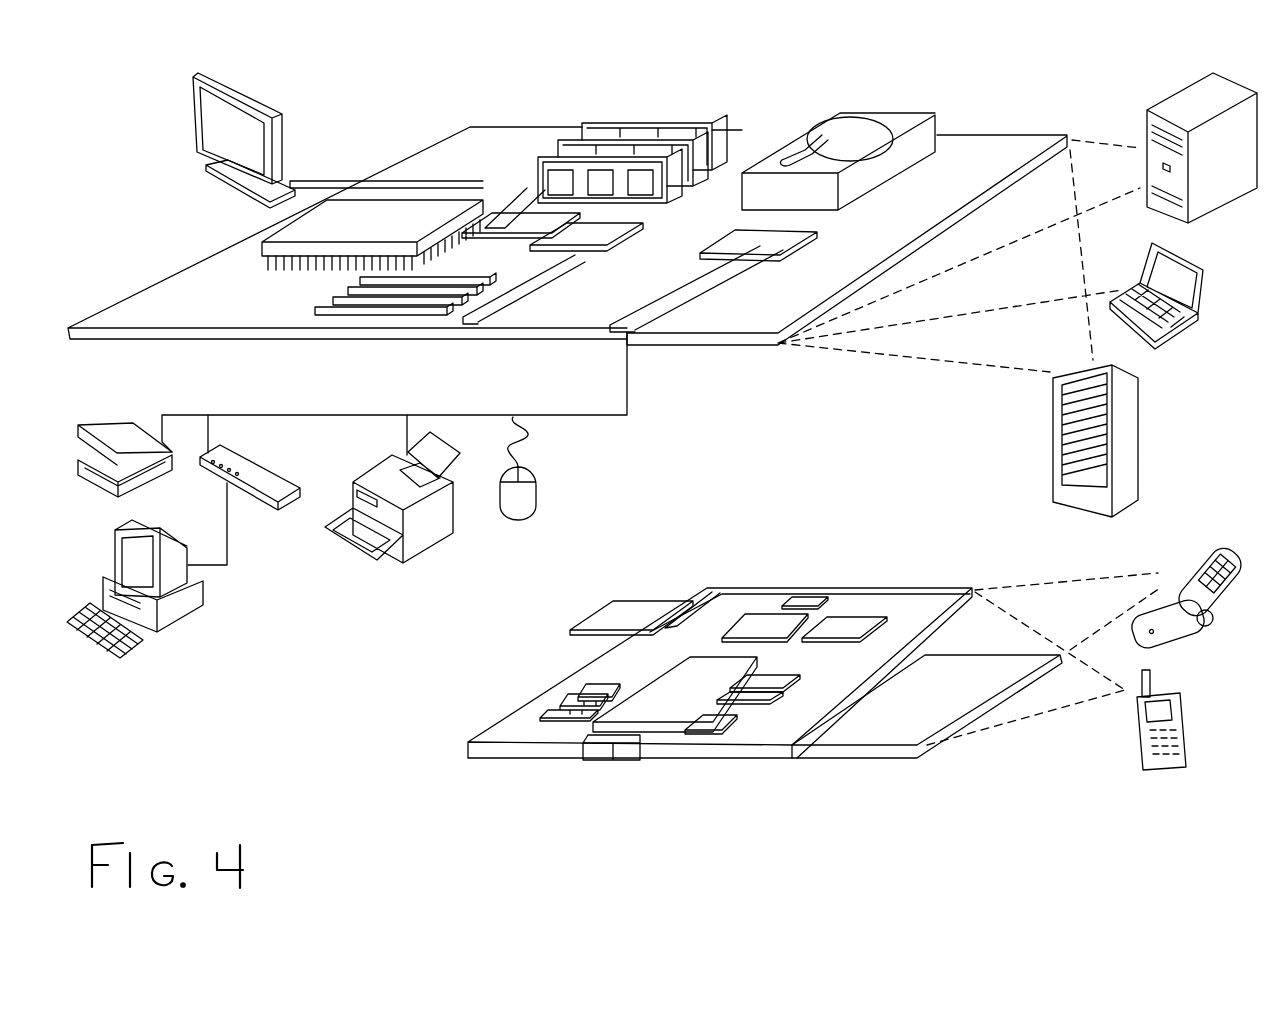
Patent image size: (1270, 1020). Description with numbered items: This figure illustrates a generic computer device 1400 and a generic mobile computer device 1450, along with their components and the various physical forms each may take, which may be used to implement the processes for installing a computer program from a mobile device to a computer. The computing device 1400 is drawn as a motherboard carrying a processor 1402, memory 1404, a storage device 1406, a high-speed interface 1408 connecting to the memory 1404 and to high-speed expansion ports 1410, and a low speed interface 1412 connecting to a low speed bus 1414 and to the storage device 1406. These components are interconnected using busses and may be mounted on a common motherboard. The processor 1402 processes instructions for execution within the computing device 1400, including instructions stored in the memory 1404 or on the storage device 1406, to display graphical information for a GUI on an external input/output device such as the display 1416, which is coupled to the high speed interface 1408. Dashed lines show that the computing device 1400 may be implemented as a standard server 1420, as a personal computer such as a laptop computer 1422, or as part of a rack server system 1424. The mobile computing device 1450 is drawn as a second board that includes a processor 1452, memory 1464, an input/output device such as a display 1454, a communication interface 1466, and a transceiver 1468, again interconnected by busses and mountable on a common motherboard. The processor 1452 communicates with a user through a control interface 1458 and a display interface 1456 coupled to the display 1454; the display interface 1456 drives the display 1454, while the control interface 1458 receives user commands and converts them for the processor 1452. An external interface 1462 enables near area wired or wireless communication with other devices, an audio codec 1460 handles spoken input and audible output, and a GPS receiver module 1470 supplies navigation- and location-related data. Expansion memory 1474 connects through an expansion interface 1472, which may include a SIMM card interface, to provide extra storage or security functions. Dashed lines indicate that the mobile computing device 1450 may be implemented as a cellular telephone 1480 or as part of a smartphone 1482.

The computing device 1400 is at (391, 97).
The processor 1402 is at (235, 249).
The memory 1404 is at (595, 122).
The storage device 1406 is at (822, 117).
The high-speed interface 1408 is at (525, 205).
The high-speed expansion ports 1410 is at (335, 296).
The low speed interface 1412 is at (742, 228).
The low speed bus 1414 is at (670, 342).
The display 1416 is at (206, 80).
The standard server 1420 is at (1140, 125).
The laptop computer 1422 is at (1206, 272).
The rack server system 1424 is at (1055, 466).
The mobile computing device 1450 is at (436, 761).
The processor 1452 is at (647, 712).
The display 1454 is at (880, 735).
The display interface 1456 is at (727, 734).
The control interface 1458 is at (765, 704).
The audio codec 1460 is at (778, 692).
The external interface 1462 is at (612, 761).
The memory 1464 is at (548, 700).
The communication interface 1466 is at (742, 612).
The transceiver 1468 is at (845, 615).
The GPS receiver module 1470 is at (808, 597).
The expansion interface 1472 is at (684, 596).
The expansion memory 1474 is at (612, 604).
The cellular telephone 1480 is at (1168, 560).
The smartphone 1482 is at (1138, 730).